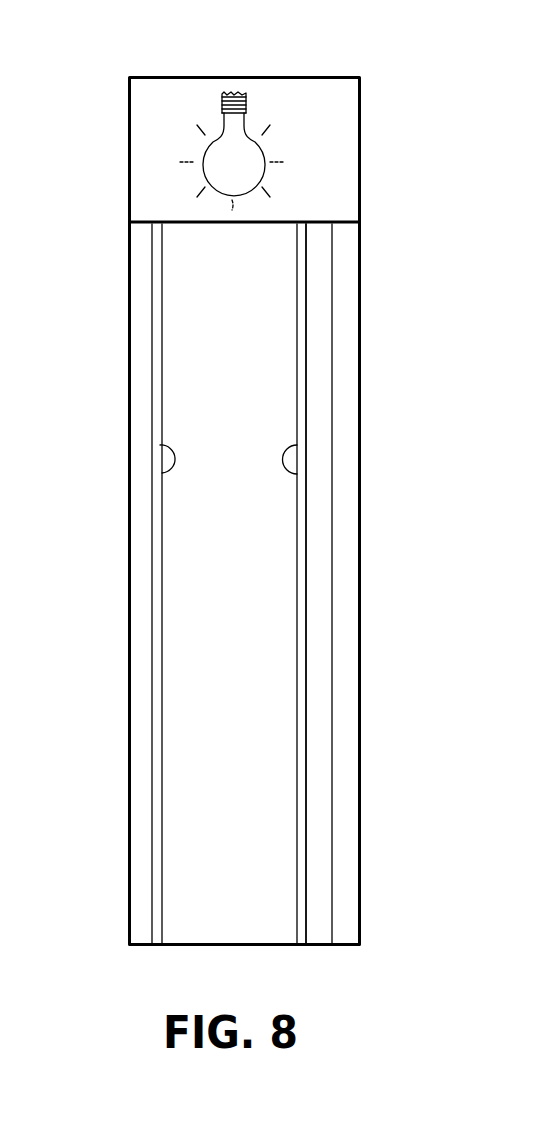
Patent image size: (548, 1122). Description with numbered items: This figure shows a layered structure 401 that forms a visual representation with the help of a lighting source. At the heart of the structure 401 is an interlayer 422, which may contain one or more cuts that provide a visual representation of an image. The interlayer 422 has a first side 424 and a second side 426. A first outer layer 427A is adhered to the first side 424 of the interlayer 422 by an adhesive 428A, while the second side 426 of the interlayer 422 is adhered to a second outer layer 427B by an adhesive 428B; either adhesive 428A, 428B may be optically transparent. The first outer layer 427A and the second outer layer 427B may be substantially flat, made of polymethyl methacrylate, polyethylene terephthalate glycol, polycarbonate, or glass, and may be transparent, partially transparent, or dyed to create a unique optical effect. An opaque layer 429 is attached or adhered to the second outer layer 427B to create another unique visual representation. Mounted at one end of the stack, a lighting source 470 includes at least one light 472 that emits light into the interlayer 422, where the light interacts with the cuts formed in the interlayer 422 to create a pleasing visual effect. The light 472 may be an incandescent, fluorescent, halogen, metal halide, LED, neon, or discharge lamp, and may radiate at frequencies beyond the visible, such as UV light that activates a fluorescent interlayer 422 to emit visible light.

The structure 401 is at (396, 177).
The lighting source 470 is at (317, 93).
The light 472 is at (205, 150).
The interlayer 422 is at (208, 298).
The first outer layer 427A is at (131, 280).
The second outer layer 427B is at (323, 290).
The adhesive 428A is at (155, 342).
The adhesive 428B is at (302, 367).
The first side 424 is at (160, 445).
The second side 426 is at (297, 445).
The opaque layer 429 is at (348, 555).